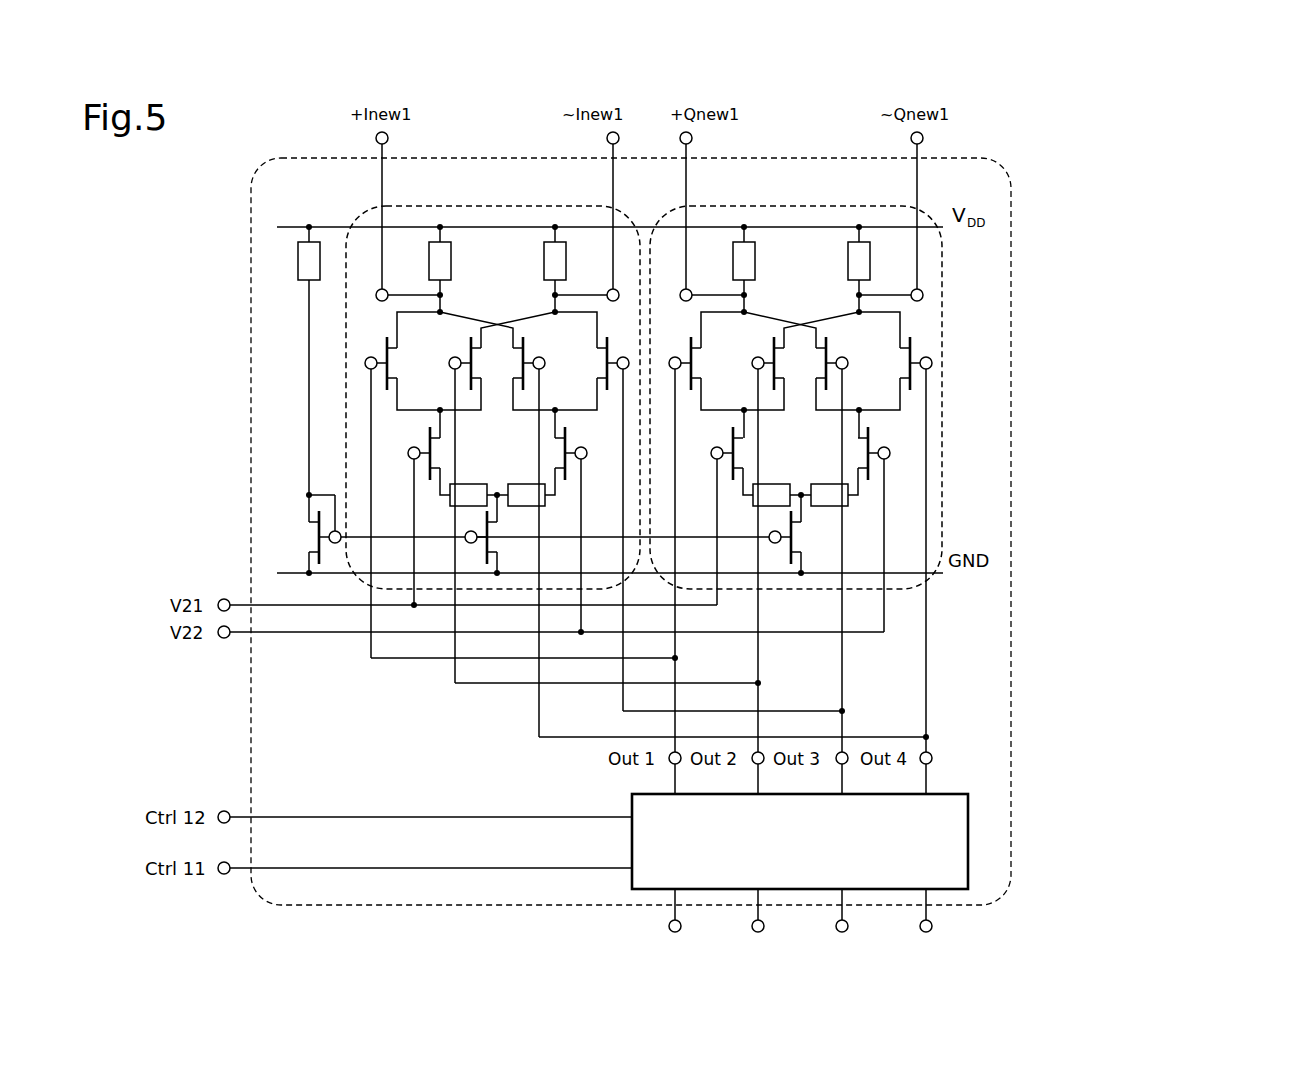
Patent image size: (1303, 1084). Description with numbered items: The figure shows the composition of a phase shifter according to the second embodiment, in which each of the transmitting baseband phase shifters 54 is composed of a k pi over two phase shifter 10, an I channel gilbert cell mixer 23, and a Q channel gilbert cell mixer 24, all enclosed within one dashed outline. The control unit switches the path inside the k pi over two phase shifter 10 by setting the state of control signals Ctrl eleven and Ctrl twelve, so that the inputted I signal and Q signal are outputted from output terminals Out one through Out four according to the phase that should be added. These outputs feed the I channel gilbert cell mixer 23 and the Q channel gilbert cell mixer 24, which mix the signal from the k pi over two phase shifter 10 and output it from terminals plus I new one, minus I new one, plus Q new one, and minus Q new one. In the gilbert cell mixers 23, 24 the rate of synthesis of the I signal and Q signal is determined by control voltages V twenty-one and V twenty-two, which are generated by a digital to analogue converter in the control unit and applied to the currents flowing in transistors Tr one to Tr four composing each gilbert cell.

The kπ/2 phase shifter 10 is at (951, 794).
The I channel gilbert cell mixer 23 is at (344, 398).
The Q channel gilbert cell mixer 24 is at (943, 403).
The transmitting baseband phase shifters 54 is at (1013, 186).